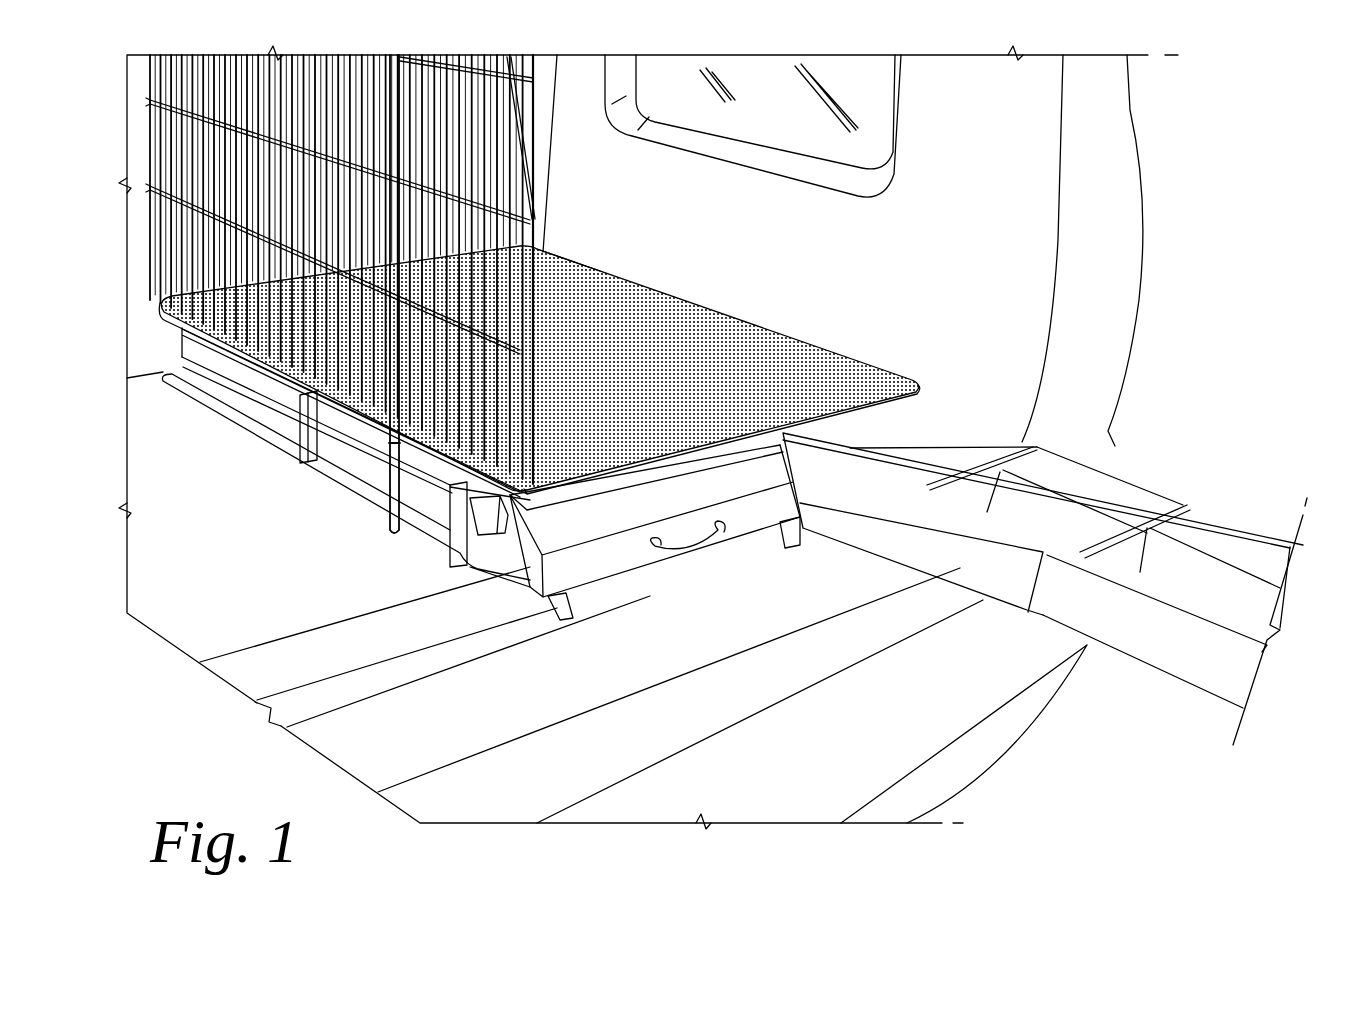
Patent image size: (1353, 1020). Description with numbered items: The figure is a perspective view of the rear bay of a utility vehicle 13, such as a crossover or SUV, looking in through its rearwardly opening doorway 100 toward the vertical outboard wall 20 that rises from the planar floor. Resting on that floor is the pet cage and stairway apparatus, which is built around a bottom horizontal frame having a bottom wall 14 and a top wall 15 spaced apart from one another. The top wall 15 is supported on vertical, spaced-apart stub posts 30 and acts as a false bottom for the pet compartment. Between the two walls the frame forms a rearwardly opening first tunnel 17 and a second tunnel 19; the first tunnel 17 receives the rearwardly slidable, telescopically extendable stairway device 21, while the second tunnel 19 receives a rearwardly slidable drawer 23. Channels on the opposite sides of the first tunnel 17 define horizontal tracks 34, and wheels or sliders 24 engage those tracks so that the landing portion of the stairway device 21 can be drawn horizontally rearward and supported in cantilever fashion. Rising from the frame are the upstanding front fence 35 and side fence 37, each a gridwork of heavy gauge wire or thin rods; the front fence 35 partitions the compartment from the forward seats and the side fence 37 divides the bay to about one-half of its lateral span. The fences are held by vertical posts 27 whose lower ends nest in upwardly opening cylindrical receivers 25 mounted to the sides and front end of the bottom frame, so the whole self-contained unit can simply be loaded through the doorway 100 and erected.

The doorway 100 is at (1115, 235).
The vehicle 13 is at (1138, 318).
The outboard wall 20 is at (950, 281).
The top wall 15 is at (783, 358).
The side fence 37 is at (540, 280).
The front fence 35 is at (542, 101).
The bottom wall 14 is at (425, 548).
The horizontal track 34 is at (232, 375).
The stub post 30 is at (296, 431).
The slider 24 is at (300, 450).
The vertical post 27 is at (365, 410).
The cylindrical receiver 25 is at (372, 477).
The first tunnel 17 is at (648, 468).
The stairway device 21 is at (622, 580).
The second tunnel 19 is at (852, 420).
The drawer 23 is at (1220, 502).